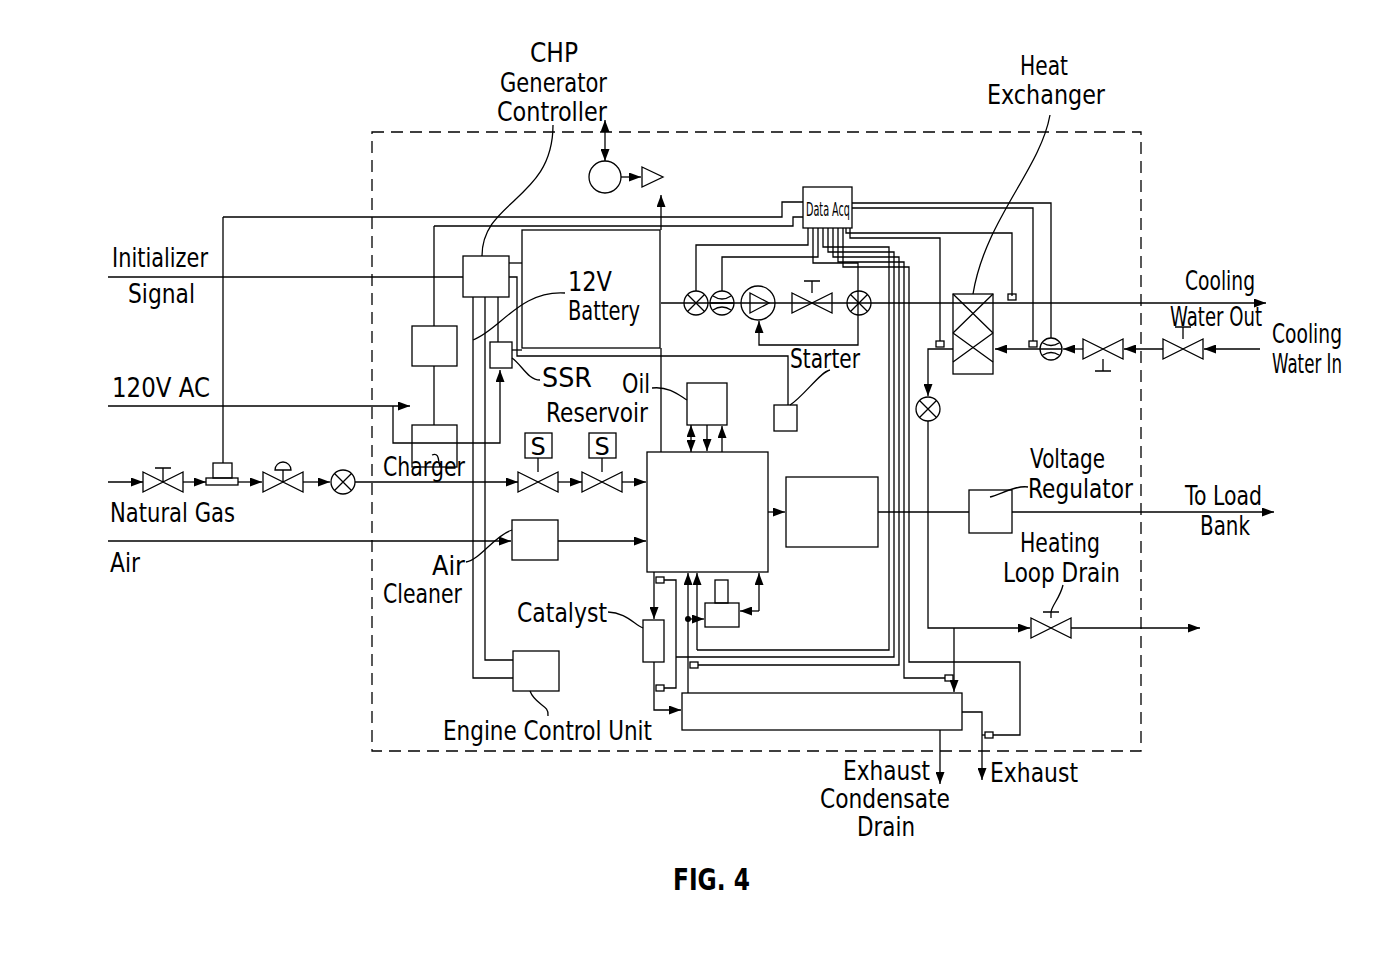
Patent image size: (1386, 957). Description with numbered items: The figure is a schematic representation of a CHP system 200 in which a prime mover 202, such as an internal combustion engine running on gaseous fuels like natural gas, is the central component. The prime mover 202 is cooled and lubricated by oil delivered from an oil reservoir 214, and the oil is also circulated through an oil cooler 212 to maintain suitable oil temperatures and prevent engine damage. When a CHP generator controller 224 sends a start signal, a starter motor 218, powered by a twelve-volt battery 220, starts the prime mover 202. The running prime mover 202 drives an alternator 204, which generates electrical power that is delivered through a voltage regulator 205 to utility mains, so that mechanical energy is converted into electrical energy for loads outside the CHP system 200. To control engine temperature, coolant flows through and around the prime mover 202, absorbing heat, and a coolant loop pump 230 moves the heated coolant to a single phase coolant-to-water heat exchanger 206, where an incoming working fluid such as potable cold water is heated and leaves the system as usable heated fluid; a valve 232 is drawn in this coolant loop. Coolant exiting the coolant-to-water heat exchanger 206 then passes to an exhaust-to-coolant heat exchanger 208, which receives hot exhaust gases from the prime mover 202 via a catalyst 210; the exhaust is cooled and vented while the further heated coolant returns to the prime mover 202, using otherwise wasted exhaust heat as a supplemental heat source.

The CHP system 200 is at (1147, 81).
The prime mover 202 is at (770, 465).
The alternator 204 is at (834, 547).
The voltage regulator 205 is at (977, 533).
The coolant-to-water heat exchanger 206 is at (975, 374).
The exhaust-to-coolant heat exchanger 208 is at (781, 730).
The catalyst 210 is at (643, 650).
The oil cooler 212 is at (735, 627).
The oil reservoir 214 is at (727, 394).
The starter motor 218 is at (797, 416).
The 12V battery 220 is at (412, 346).
The CHP generator controller 224 is at (463, 266).
The coolant loop pump 230 is at (766, 290).
The coolant valve 232 is at (812, 308).